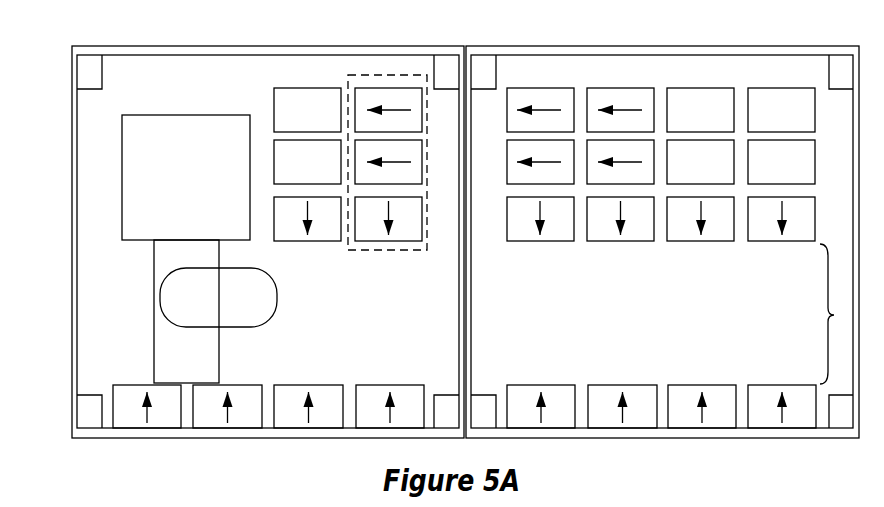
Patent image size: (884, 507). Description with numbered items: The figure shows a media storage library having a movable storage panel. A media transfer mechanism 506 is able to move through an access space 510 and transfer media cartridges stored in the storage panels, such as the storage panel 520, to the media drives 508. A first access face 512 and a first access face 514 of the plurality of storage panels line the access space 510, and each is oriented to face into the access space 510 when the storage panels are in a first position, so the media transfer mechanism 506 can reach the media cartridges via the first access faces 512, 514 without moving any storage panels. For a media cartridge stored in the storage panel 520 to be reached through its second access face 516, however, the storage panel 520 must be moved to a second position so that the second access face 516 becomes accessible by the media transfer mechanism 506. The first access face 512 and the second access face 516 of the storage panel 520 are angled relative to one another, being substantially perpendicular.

The media transfer mechanism 506 is at (173, 295).
The media drives 508 is at (142, 122).
The access space 510 is at (845, 314).
The first access face 512 is at (403, 233).
The first access face 514 is at (529, 390).
The second access face 516 is at (360, 163).
The storage panel 520 is at (366, 252).